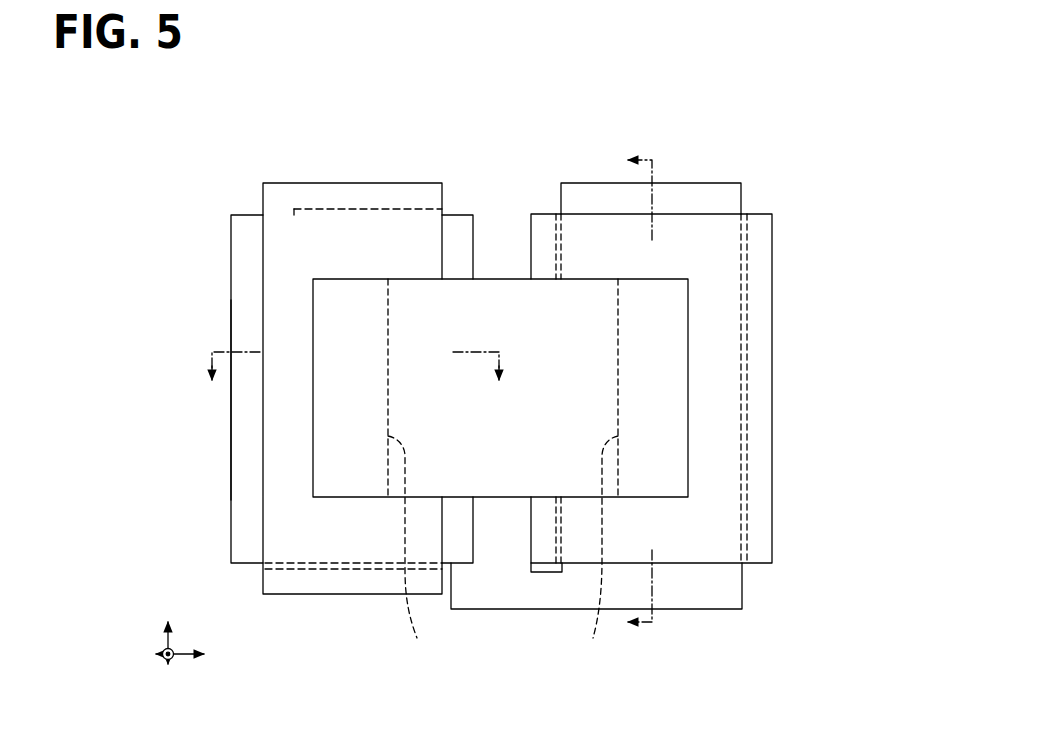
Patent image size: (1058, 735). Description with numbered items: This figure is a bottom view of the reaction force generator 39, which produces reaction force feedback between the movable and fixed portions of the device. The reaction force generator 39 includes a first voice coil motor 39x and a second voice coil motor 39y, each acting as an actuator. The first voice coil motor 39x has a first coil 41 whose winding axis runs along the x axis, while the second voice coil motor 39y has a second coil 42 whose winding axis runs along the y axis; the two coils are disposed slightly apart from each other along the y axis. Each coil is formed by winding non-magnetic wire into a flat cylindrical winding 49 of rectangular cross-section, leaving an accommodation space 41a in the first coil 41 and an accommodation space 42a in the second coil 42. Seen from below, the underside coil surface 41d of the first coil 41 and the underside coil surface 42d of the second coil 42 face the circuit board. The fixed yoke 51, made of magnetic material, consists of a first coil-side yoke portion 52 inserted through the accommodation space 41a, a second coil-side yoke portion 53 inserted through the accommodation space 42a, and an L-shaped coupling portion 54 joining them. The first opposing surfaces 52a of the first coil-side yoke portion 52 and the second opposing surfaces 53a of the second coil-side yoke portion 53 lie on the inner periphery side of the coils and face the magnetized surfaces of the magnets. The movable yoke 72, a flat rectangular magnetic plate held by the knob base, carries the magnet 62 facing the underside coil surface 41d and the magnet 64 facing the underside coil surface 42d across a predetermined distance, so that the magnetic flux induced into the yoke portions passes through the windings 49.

The reaction force generator 39 is at (745, 159).
The first voice coil motor 39x is at (783, 207).
The second voice coil motor 39y is at (243, 165).
The first coil 41 is at (772, 311).
The accommodation space 41a is at (568, 231).
The underside coil surface 41d is at (757, 370).
The second coil 42 is at (322, 183).
The accommodation space 42a is at (295, 216).
The underside coil surface 42d is at (302, 577).
The winding 49 is at (568, 353).
The fixed yoke 51 is at (232, 408).
The first coil-side yoke portion 52 is at (704, 190).
The first opposing surfaces 52a is at (654, 164).
The second coil-side yoke portion 53 is at (242, 472).
The second opposing surfaces 53a is at (276, 389).
The coupling portion 54 is at (535, 582).
The magnet 62 is at (600, 554).
The magnet 64 is at (411, 555).
The movable yoke 72 is at (481, 297).